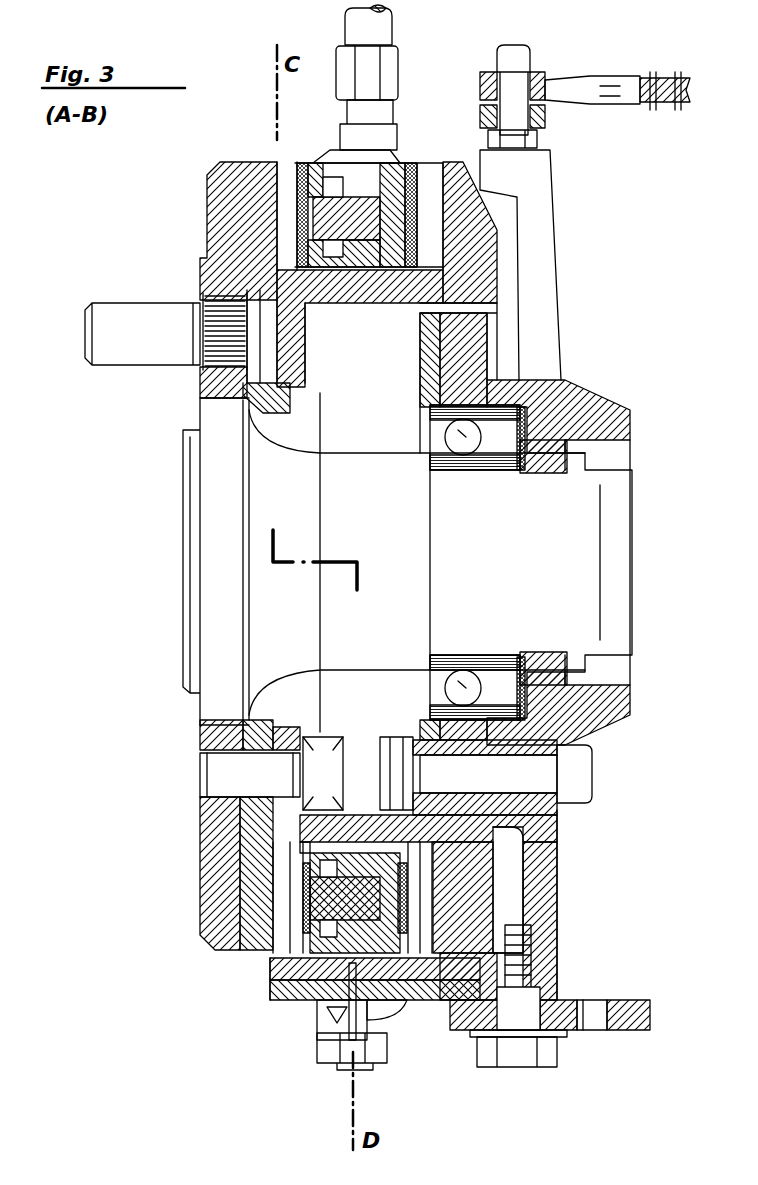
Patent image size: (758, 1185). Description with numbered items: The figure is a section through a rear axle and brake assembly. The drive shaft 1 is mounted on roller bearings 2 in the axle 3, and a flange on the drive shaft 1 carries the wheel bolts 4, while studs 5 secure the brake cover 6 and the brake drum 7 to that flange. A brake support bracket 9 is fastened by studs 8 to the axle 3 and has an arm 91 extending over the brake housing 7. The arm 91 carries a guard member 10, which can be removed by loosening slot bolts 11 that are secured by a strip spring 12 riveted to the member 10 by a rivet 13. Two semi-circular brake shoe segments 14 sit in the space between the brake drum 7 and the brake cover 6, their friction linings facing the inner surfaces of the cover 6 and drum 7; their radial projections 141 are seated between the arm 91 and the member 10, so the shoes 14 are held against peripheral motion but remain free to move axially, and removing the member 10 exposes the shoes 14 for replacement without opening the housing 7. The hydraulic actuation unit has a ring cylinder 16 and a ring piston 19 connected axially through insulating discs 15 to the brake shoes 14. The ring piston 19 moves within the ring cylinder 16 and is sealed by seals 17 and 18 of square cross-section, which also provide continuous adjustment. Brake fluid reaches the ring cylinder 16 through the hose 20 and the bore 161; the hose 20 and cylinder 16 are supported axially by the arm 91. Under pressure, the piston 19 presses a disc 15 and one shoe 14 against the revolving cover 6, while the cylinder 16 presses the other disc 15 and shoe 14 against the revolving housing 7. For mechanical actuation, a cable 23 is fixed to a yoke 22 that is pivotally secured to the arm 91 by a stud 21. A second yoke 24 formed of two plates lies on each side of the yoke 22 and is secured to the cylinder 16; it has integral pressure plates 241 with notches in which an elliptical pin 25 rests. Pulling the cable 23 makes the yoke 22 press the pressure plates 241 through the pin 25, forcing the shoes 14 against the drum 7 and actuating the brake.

The drive shaft 1 is at (222, 560).
The roller bearings 2 is at (465, 442).
The axle 3 is at (590, 415).
The wheel bolts 4 is at (140, 330).
The studs 5 is at (228, 775).
The brake cover 6 is at (240, 232).
The brake drum 7 is at (465, 248).
The studs 8 is at (575, 773).
The brake support bracket 9 is at (540, 830).
The arm 91 is at (263, 967).
The guard member 10 is at (267, 987).
The slot bolts 11 is at (363, 990).
The strip spring 12 is at (337, 1007).
The rivet 13 is at (340, 1033).
The brake shoe segments 14 is at (407, 262).
The radial projections 141 is at (457, 1087).
The insulating discs 15 is at (470, 888).
The ring cylinder 16 is at (343, 867).
The bore 161 is at (363, 188).
The seal 17 is at (322, 858).
The seal 18 is at (320, 935).
The ring piston 19 is at (330, 918).
The hose 20 is at (372, 77).
The stud 21 is at (515, 1060).
The yoke 22 is at (520, 173).
The cable 23 is at (672, 108).
The yoke 24 is at (592, 1010).
The pressure plates 241 is at (622, 1012).
The pin 25 is at (333, 1047).